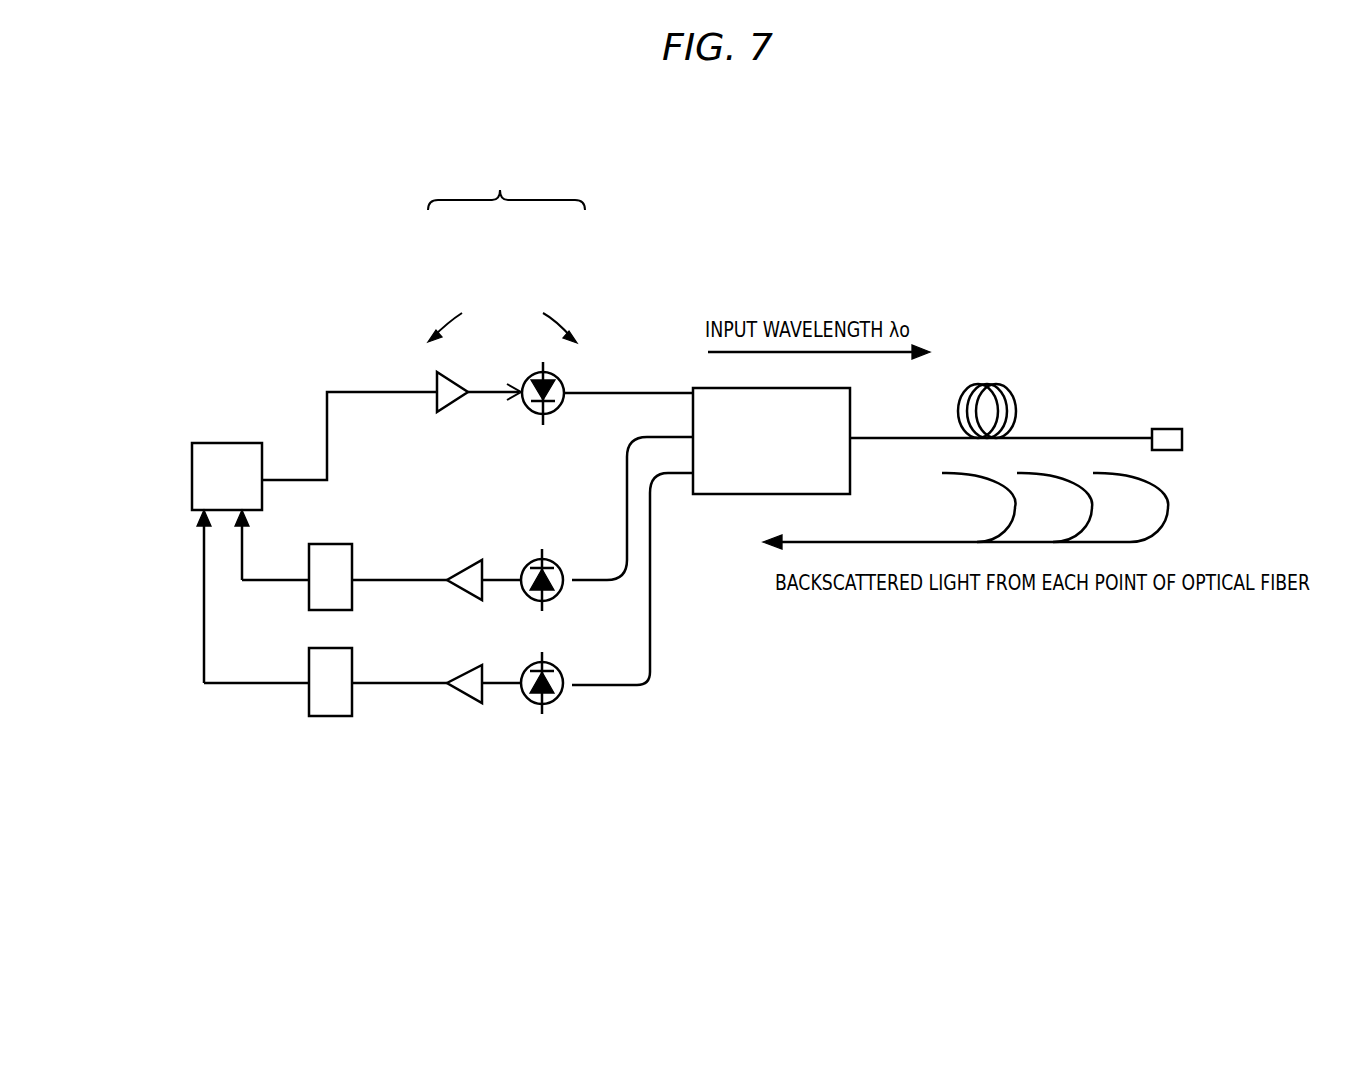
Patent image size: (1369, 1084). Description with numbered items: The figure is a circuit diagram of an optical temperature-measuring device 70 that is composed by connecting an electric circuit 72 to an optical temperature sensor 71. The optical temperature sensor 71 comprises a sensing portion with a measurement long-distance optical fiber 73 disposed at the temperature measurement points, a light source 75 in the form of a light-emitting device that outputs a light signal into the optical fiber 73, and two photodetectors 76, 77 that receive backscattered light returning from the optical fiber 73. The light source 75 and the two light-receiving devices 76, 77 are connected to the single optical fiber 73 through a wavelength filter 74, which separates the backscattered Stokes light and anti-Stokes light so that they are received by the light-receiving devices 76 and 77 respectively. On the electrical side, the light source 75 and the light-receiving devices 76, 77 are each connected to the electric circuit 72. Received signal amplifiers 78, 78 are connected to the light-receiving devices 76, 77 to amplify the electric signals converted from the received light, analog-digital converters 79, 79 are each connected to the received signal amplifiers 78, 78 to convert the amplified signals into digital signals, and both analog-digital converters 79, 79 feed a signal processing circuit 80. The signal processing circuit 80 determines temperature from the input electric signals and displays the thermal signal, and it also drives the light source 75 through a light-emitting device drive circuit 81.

The optical temperature-measuring device 70 is at (664, 186).
The optical temperature sensor 71 is at (564, 275).
The electric circuit 72 is at (455, 274).
The optical fiber 73 is at (1010, 423).
The wavelength filter 74 is at (717, 478).
The light source 75 is at (527, 412).
The photodetector 76 is at (558, 597).
The photodetector 77 is at (530, 703).
The received signal amplifier 78 is at (457, 595).
The analog-digital converter 79 is at (277, 730).
The signal processing circuit 80 is at (253, 448).
The light-emitting device drive circuit 81 is at (432, 415).